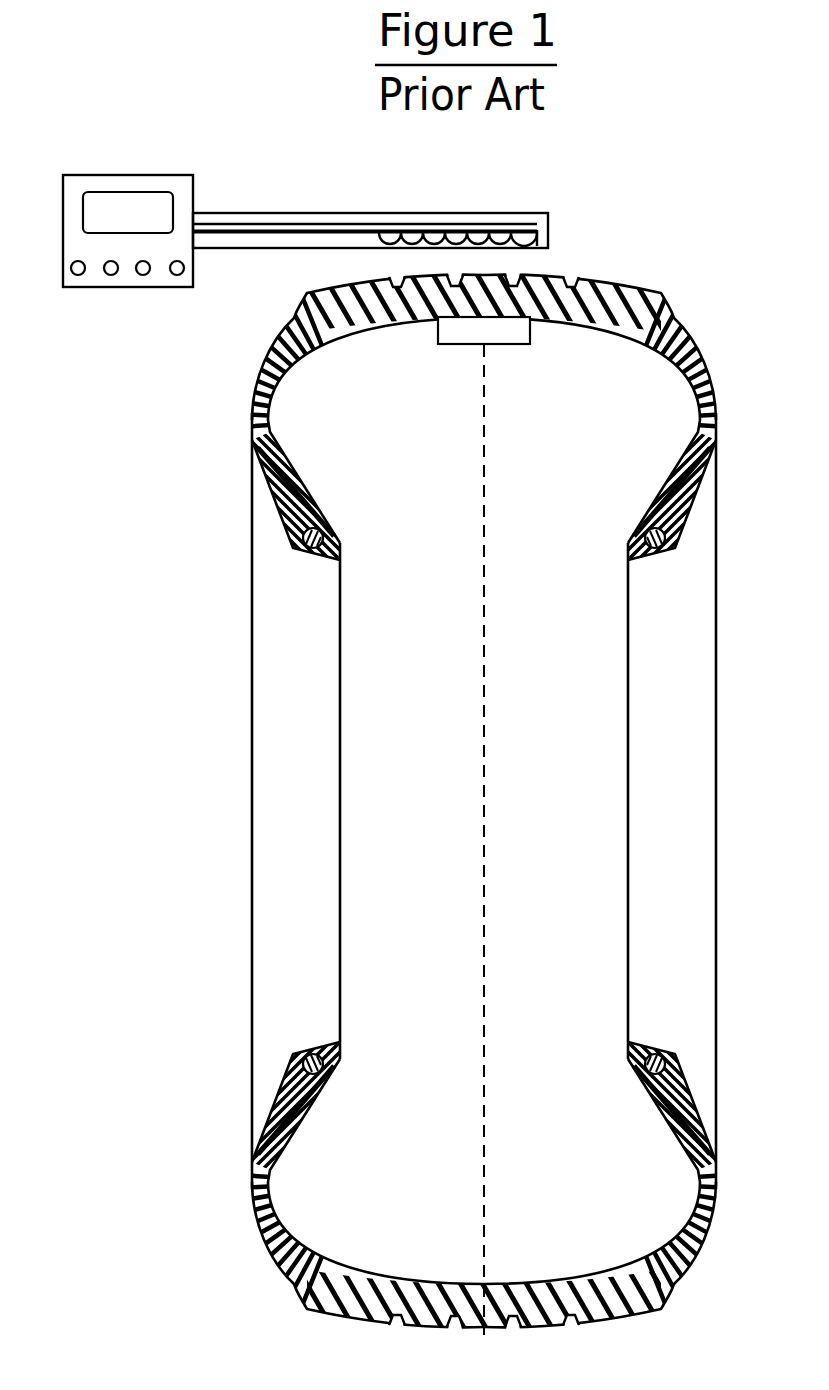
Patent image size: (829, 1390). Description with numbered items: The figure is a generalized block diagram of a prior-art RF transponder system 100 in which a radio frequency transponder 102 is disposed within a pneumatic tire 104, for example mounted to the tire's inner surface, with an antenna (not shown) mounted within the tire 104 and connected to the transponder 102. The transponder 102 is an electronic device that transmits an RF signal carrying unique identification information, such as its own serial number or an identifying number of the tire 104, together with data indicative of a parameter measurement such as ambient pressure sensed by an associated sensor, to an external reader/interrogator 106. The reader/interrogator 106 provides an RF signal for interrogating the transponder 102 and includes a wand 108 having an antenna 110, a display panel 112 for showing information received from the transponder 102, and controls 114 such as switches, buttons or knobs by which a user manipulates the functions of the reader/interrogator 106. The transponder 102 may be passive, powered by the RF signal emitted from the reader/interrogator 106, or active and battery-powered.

The RF transponder system 100 is at (335, 148).
The RF transponder 102 is at (508, 345).
The pneumatic tire 104 is at (620, 292).
The external reader/interrogator 106 is at (192, 176).
The wand 108 is at (548, 213).
The antenna 110 is at (441, 224).
The display panel 112 is at (100, 191).
The controls 114 is at (80, 281).